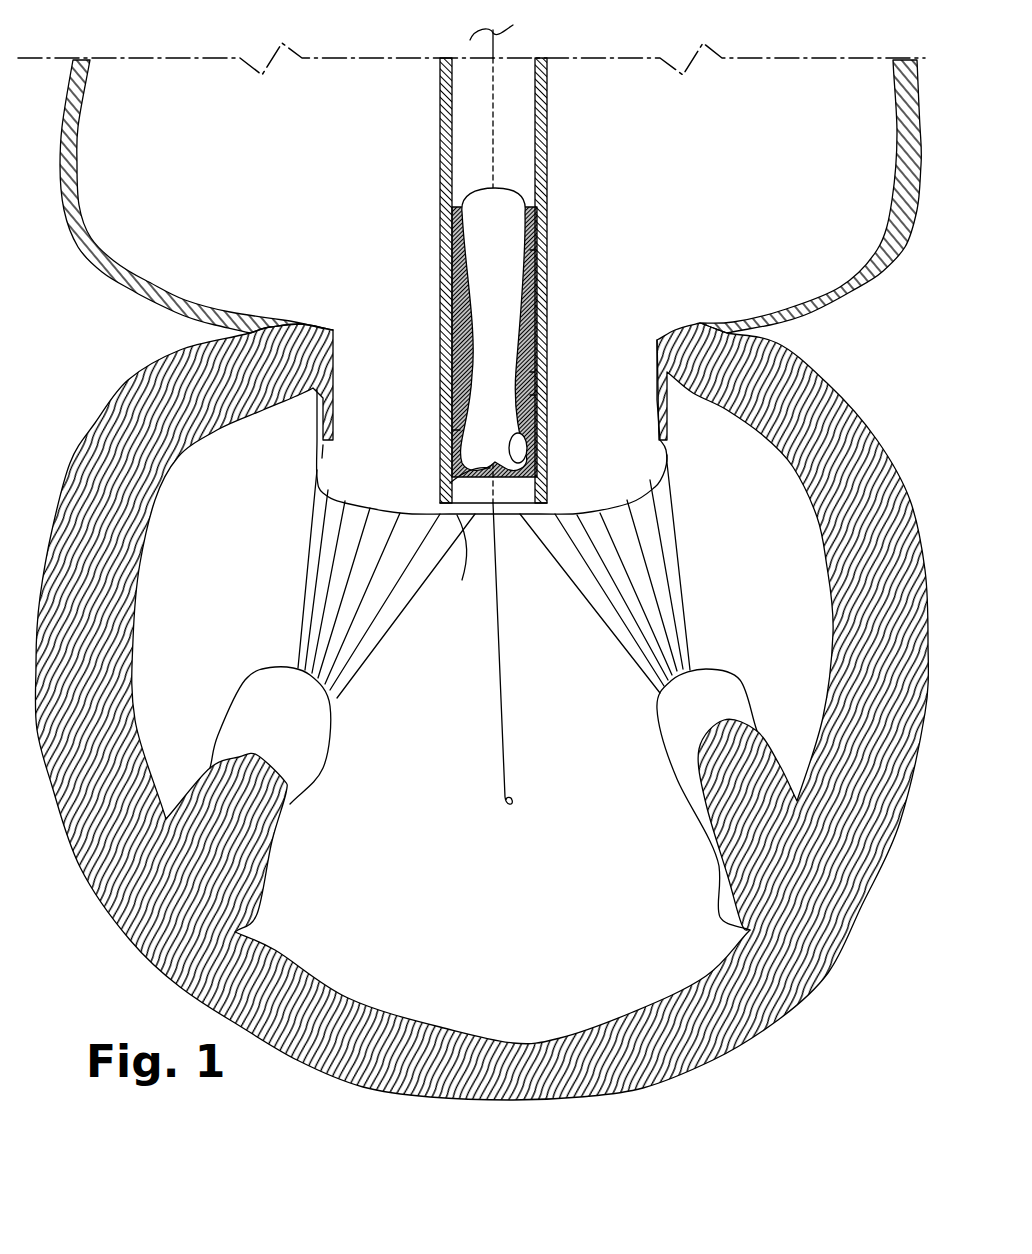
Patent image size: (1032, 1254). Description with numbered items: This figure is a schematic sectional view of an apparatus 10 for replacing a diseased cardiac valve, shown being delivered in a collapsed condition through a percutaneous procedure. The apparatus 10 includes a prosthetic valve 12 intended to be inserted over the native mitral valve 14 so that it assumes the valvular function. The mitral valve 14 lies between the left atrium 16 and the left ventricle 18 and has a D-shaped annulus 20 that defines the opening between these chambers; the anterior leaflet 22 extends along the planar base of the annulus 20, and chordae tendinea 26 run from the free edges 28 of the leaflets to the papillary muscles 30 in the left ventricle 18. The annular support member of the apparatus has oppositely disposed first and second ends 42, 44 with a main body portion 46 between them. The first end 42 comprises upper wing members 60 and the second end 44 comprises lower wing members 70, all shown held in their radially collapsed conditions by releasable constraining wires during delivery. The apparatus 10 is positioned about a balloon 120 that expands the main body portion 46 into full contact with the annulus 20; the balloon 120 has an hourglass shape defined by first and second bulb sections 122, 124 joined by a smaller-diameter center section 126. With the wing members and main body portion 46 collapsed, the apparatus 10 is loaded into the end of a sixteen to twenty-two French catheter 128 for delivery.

The apparatus 10 is at (573, 266).
The prosthetic valve 12 is at (497, 490).
The mitral valve 14 is at (308, 439).
The left atrium 16 is at (788, 217).
The left ventricle 18 is at (767, 611).
The annulus 20 is at (654, 344).
The anterior leaflet 22 is at (667, 447).
The chordae tendinea 26 is at (350, 666).
The free edges 28 is at (462, 580).
The papillary muscles 30 is at (296, 757).
The first end 42 is at (545, 252).
The second end 44 is at (548, 395).
The main body portion 46 is at (548, 372).
The upper wing members 60 is at (452, 247).
The lower wing members 70 is at (452, 425).
The balloon 120 is at (520, 195).
The first bulb section 122 is at (450, 485).
The second bulb section 124 is at (543, 480).
The center section 126 is at (488, 328).
The catheter 128 is at (547, 90).